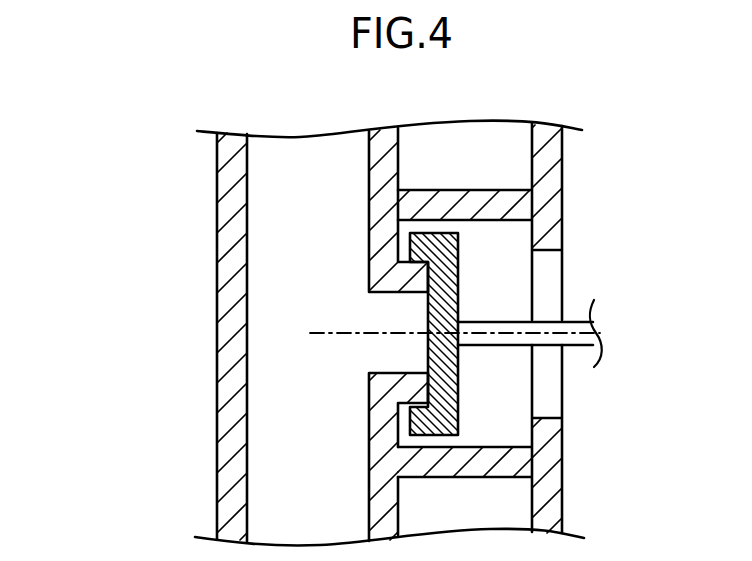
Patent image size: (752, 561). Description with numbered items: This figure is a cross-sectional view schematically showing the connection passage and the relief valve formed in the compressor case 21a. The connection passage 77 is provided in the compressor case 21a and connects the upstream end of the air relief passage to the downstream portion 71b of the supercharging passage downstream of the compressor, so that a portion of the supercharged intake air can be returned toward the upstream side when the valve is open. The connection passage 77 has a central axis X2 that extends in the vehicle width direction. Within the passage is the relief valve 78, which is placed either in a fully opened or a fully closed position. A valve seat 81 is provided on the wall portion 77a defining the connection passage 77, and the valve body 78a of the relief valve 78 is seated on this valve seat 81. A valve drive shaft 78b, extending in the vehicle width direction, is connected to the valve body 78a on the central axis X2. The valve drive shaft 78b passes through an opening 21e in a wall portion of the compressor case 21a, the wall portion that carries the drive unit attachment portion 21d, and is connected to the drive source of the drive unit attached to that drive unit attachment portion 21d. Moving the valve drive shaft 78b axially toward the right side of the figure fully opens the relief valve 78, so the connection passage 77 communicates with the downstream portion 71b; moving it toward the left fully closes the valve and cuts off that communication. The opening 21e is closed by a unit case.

The compressor case 21a is at (217, 179).
The drive unit attachment portion 21d is at (562, 230).
The opening 21e is at (542, 293).
The downstream portion 71b is at (292, 435).
The connection passage 77 is at (396, 354).
The wall portion 77a is at (372, 278).
The relief valve 78 is at (465, 425).
The valve body 78a is at (458, 402).
The valve drive shaft 78b is at (575, 348).
The valve seat 81 is at (460, 280).
The central axis X2 is at (320, 333).